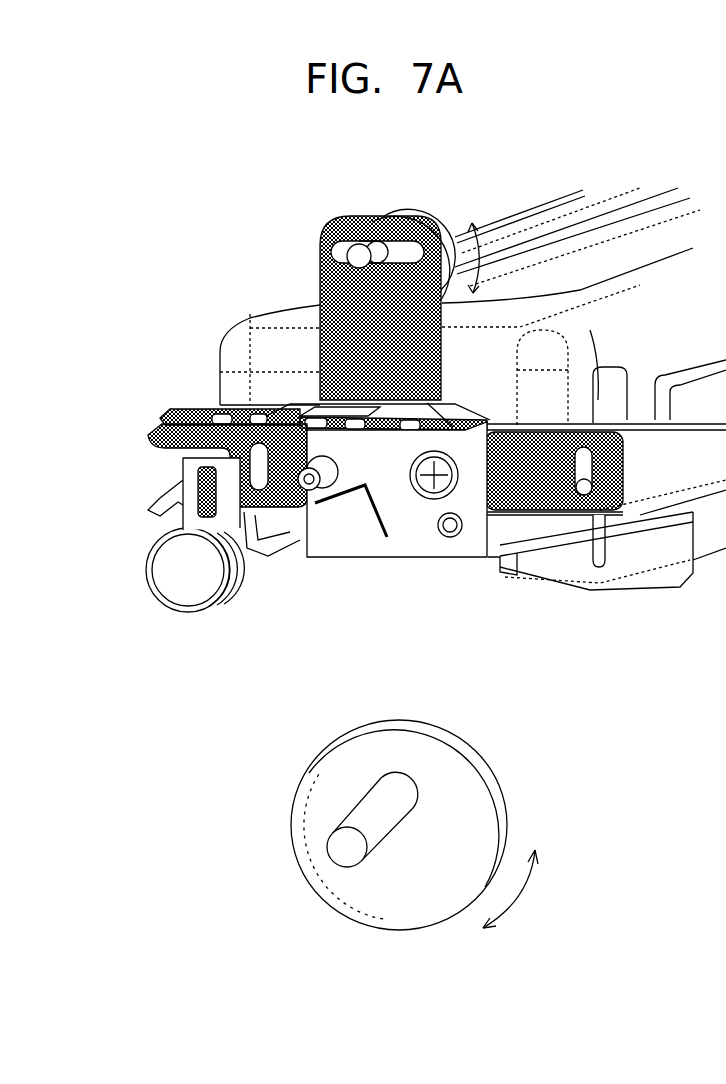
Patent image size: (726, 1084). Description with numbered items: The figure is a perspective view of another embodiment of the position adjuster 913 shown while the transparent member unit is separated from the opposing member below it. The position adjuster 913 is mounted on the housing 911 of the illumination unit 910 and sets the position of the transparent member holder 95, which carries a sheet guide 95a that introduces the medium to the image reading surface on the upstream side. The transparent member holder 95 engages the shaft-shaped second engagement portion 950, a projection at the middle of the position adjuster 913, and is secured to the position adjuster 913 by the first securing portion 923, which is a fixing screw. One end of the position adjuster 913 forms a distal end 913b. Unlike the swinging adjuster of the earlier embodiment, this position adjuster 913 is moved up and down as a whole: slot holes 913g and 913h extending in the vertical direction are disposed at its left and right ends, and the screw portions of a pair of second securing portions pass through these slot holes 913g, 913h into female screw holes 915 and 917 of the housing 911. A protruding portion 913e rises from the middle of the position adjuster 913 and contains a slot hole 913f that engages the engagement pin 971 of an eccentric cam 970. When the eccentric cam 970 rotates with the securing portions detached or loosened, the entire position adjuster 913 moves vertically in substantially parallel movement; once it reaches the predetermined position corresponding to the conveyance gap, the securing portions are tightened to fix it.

The illumination unit 910 is at (426, 288).
The housing 911 is at (660, 295).
The position adjuster 913 is at (376, 398).
The distal end 913b is at (153, 432).
The protruding portion 913e is at (324, 258).
The slot hole 913f is at (350, 241).
The slot hole 913g is at (247, 447).
The slot hole 913h is at (576, 433).
The female screw hole 915 is at (250, 482).
The female screw hole 917 is at (593, 490).
The first securing portion 923 is at (420, 498).
The transparent member holder 95 is at (380, 524).
The sheet guide 95a is at (580, 593).
The second engagement portion 950 is at (304, 500).
The eccentric cam 970 is at (441, 237).
The engagement pin 971 is at (378, 264).